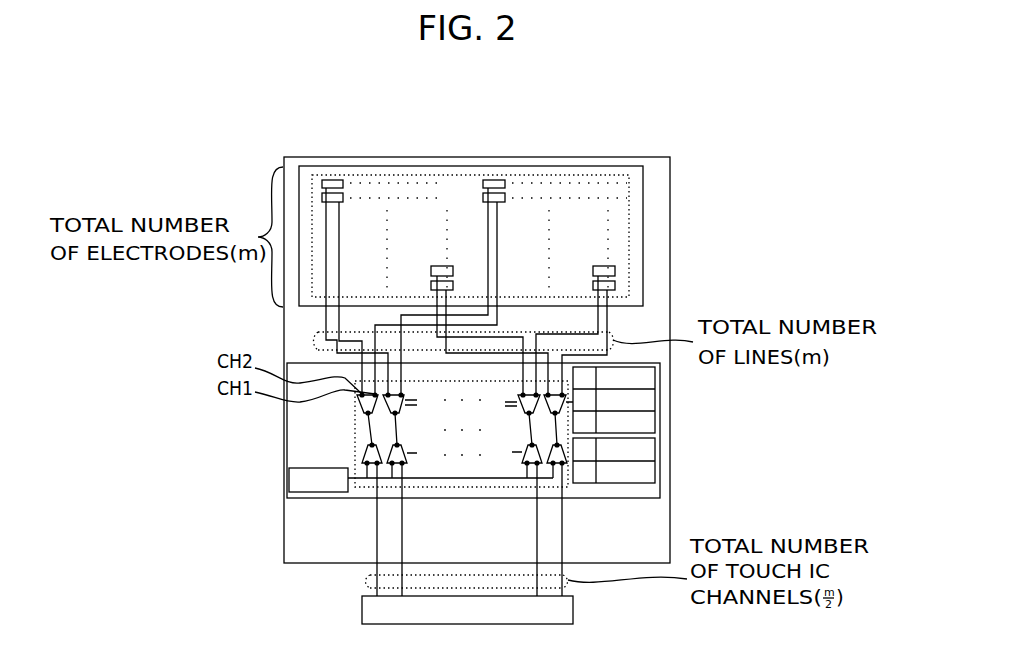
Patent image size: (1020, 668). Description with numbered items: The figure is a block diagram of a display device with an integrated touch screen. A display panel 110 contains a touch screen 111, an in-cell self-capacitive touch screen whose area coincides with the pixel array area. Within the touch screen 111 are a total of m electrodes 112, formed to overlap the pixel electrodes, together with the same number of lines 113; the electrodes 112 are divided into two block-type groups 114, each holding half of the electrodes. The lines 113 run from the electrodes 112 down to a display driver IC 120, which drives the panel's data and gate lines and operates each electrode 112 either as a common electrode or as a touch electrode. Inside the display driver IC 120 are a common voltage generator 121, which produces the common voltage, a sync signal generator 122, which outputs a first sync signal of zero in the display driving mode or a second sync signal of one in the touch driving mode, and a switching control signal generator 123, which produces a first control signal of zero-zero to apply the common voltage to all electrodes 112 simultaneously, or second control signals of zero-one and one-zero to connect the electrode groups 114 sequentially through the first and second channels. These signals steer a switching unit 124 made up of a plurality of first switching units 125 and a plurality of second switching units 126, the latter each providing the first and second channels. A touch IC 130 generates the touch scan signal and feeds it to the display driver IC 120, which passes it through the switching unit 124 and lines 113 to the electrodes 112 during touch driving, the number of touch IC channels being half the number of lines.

The display panel 110 is at (670, 177).
The touch screen 111 is at (643, 203).
The electrode group 114 is at (629, 238).
The electrodes 112 is at (615, 269).
The lines 113 is at (615, 293).
The display driver IC 120 is at (660, 383).
The common voltage generator 121 is at (288, 481).
The sync signal generator 122 is at (653, 447).
The switching control signal generator 123 is at (655, 403).
The switching unit 124 is at (374, 428).
The first switching units 125 is at (363, 452).
The second switching units 126 is at (367, 412).
The touch IC 130 is at (573, 610).